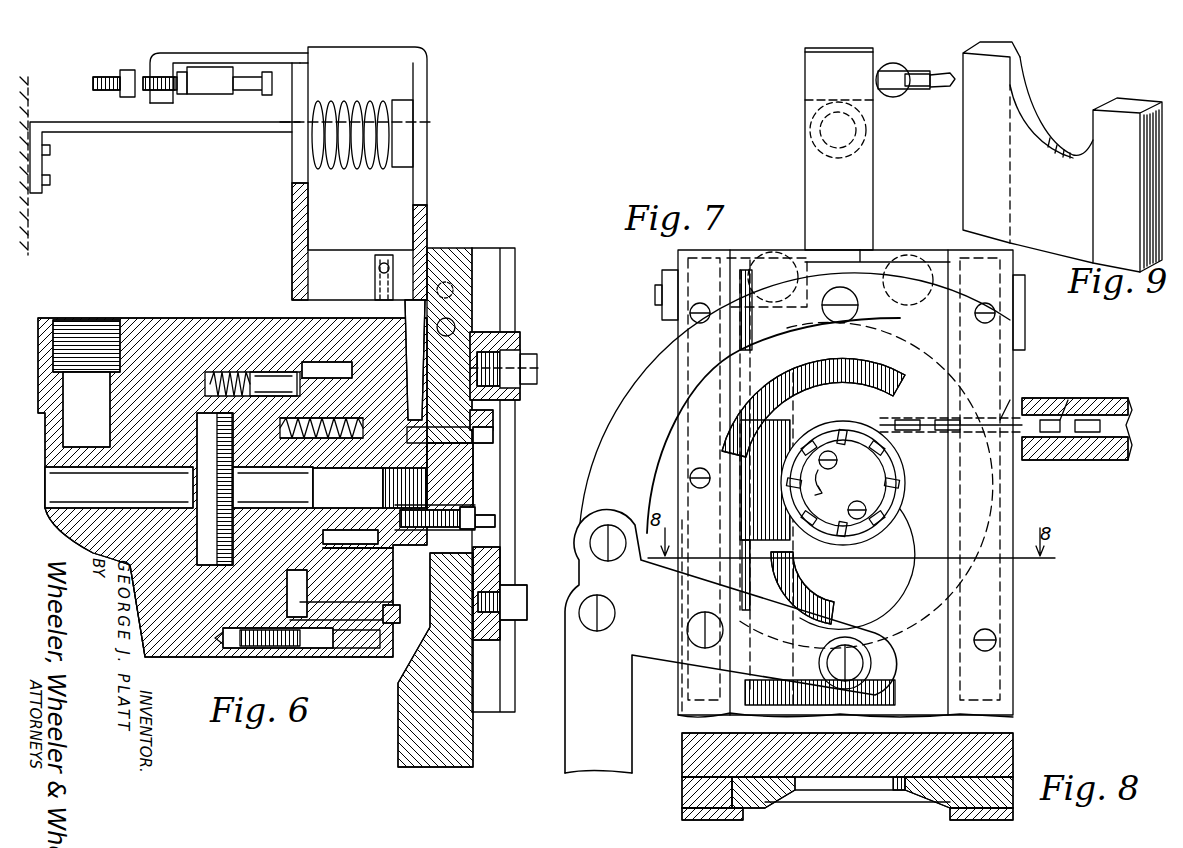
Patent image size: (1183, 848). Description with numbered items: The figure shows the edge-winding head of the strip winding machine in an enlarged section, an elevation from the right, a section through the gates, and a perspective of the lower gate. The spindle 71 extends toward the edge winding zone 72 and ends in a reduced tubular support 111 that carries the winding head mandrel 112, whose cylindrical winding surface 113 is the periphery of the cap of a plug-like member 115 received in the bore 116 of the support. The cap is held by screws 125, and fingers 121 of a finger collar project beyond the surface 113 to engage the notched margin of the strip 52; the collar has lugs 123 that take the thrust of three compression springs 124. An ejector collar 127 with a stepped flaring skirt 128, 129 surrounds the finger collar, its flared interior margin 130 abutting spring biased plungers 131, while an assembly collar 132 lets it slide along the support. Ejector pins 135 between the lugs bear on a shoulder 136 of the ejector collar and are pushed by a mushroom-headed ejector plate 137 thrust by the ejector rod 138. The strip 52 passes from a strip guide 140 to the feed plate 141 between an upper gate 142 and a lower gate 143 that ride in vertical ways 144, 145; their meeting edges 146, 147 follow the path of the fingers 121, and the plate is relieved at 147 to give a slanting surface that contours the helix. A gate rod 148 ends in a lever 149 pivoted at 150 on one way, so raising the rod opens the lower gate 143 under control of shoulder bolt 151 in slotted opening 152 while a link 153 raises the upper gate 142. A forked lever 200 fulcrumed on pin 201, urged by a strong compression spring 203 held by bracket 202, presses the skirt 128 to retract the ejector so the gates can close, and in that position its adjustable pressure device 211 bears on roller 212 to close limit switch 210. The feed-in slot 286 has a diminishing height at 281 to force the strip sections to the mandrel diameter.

In FIG. 7, the strip 52 is at (1050, 378).
In FIG. 6, the spindle 71 is at (128, 572).
In FIG. 6, the edge winding zone 72 is at (200, 318).
In FIG. 7, the edge winding zone 72 is at (1005, 582).
In FIG. 6, the tubular support 111 is at (358, 537).
In FIG. 6, the winding head mandrel 112 is at (470, 492).
In FIG. 7, the winding head mandrel 112 is at (845, 465).
In FIG. 6, the cylindrical winding surface 113 is at (480, 537).
In FIG. 6, the plug-like member 115 is at (385, 473).
In FIG. 6, the bore 116 is at (353, 518).
In FIG. 6, the fingers 121 is at (495, 440).
In FIG. 7, the fingers 121 is at (912, 440).
In FIG. 6, the lugs 123 is at (321, 410).
In FIG. 6, the compression springs 124 is at (336, 418).
In FIG. 6, the screws 125 is at (476, 512).
In FIG. 7, the screws 125 is at (837, 460).
In FIG. 6, the ejector collar 127 is at (415, 390).
In FIG. 7, the ejector collar 127 is at (800, 437).
In FIG. 6, the flaring skirt-like configuration 128 is at (392, 606).
In FIG. 6, the flaring skirt-like configuration 129 is at (360, 650).
In FIG. 6, the flared interior margin 130 is at (293, 370).
In FIG. 6, the spring biased plungers 131 is at (262, 370).
In FIG. 6, the assembly collar 132 is at (325, 650).
In FIG. 6, the ejector pins 135 is at (307, 593).
In FIG. 6, the shoulder 136 is at (390, 562).
In FIG. 6, the ejector plate 137 is at (238, 505).
In FIG. 6, the ejector rod 138 is at (119, 487).
In FIG. 7, the strip guide 140 is at (1036, 362).
In FIG. 6, the feed plate 141 is at (513, 322).
In FIG. 7, the feed plate 141 is at (940, 465).
In FIG. 8, the feed plate 141 is at (1000, 752).
In FIG. 6, the upper gate 142 is at (497, 345).
In FIG. 7, the upper gate 142 is at (930, 318).
In FIG. 8, the upper gate 142 is at (735, 795).
In FIG. 6, the lower gate 143 is at (490, 637).
In FIG. 7, the lower gate 143 is at (945, 632).
In FIG. 9, the lower gate 143 is at (1131, 107).
In FIG. 7, the vertical way 144 is at (690, 687).
In FIG. 8, the vertical way 144 is at (682, 812).
In FIG. 6, the vertical way 145 is at (515, 280).
In FIG. 7, the vertical way 145 is at (1000, 675).
In FIG. 8, the vertical way 145 is at (1013, 812).
In FIG. 6, the meeting edge 146 is at (470, 432).
In FIG. 7, the meeting edge 146 is at (876, 365).
In FIG. 6, the meeting edge 147 is at (500, 553).
In FIG. 7, the meeting edge 147 is at (892, 572).
In FIG. 8, the meeting edge 147 is at (745, 790).
In FIG. 9, the meeting edge 147 is at (1059, 142).
In FIG. 7, the gate rod 148 is at (575, 760).
In FIG. 6, the lever 149 is at (527, 637).
In FIG. 7, the lever 149 is at (660, 635).
In FIG. 7, the pivot 150 is at (688, 628).
In FIG. 7, the shoulder bolt 151 is at (830, 658).
In FIG. 7, the slotted opening 152 is at (822, 672).
In FIG. 6, the link 153 is at (520, 355).
In FIG. 7, the link 153 is at (635, 398).
In FIG. 6, the forked lever 200 is at (430, 192).
In FIG. 7, the forked lever 200 is at (828, 197).
In FIG. 6, the pin 201 is at (392, 300).
In FIG. 7, the pin 201 is at (652, 315).
In FIG. 6, the bracket 202 is at (300, 240).
In FIG. 6, the compression spring 203 is at (362, 165).
In FIG. 7, the compression spring 203 is at (815, 150).
In FIG. 6, the limit switch 210 is at (430, 52).
In FIG. 6, the adjustable pressure device 211 is at (150, 100).
In FIG. 7, the adjustable pressure device 211 is at (896, 90).
In FIG. 6, the roller 212 is at (218, 92).
In FIG. 7, the roller 212 is at (922, 92).
In FIG. 6, the diminishing vertical dimension 281 is at (493, 418).
In FIG. 7, the diminishing vertical dimension 281 is at (885, 418).
In FIG. 7, the feed-in slot 286 is at (935, 420).